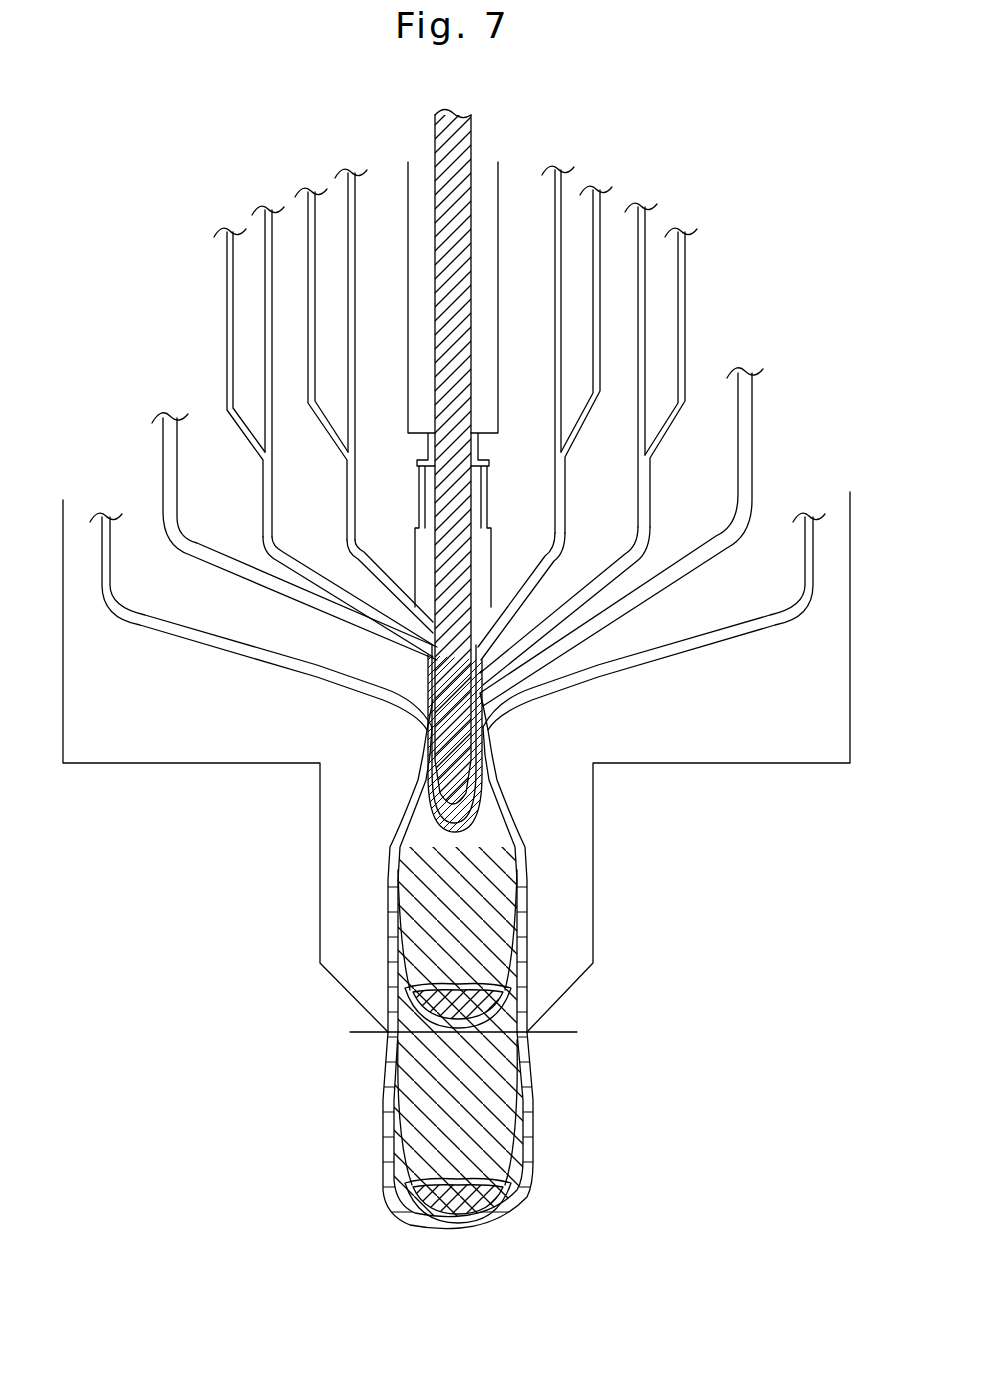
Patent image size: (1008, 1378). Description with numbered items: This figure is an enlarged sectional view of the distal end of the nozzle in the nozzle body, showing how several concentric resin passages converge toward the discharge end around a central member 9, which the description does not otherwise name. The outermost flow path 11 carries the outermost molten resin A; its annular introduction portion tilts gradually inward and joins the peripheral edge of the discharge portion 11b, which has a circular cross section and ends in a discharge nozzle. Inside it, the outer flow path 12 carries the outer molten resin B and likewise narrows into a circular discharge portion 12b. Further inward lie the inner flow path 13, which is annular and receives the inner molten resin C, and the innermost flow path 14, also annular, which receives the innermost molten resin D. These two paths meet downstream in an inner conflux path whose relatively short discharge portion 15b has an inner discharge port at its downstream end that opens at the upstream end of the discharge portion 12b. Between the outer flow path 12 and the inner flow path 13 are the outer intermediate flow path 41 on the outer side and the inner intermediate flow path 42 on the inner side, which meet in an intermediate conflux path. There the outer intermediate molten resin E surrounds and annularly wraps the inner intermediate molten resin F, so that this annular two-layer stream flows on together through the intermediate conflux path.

The core rod 9 is at (458, 136).
The outermost flow path 11 is at (163, 633).
The discharge portion 11b is at (387, 1040).
The outer flow path 12 is at (163, 460).
The discharge portion 12b is at (508, 714).
The inner flow path 13 is at (600, 300).
The innermost flow path 14 is at (561, 246).
The discharge portion 15b is at (478, 640).
The outer intermediate flow path 41 is at (227, 290).
The inner intermediate flow path 42 is at (265, 252).
The outermost molten resin A is at (243, 655).
The outer molten resin B is at (180, 550).
The inner molten resin C is at (602, 218).
The innermost molten resin D is at (562, 194).
The outer intermediate molten resin E is at (227, 367).
The inner intermediate molten resin F is at (265, 322).